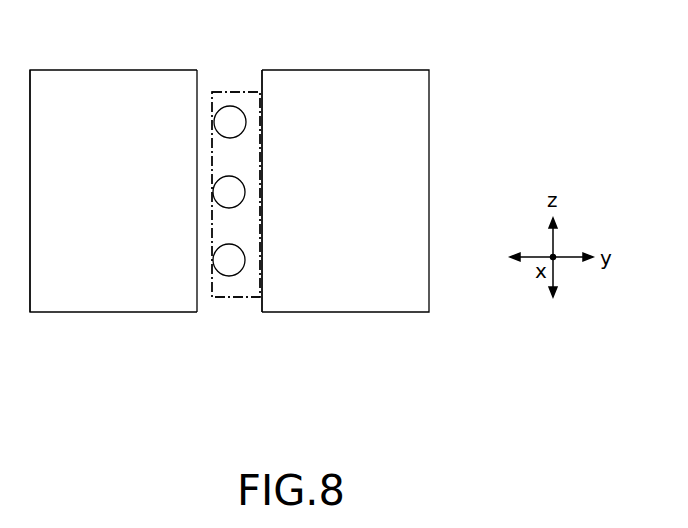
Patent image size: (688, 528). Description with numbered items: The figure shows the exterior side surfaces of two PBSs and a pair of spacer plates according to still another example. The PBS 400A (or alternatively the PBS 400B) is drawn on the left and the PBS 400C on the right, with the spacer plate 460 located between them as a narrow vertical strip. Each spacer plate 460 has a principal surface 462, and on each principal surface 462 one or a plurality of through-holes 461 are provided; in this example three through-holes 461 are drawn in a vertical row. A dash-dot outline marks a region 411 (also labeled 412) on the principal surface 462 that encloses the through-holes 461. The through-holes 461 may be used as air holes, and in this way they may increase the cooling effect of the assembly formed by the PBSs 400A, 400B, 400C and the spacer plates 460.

The PBS 400A is at (107, 302).
The PBS 400B is at (89, 233).
The PBS 400C is at (345, 302).
The first region 411 is at (237, 92).
The second region 412 is at (236, 194).
The spacer plate 460 is at (218, 303).
The through-hole 461 is at (236, 258).
The principal surface 462 is at (245, 303).